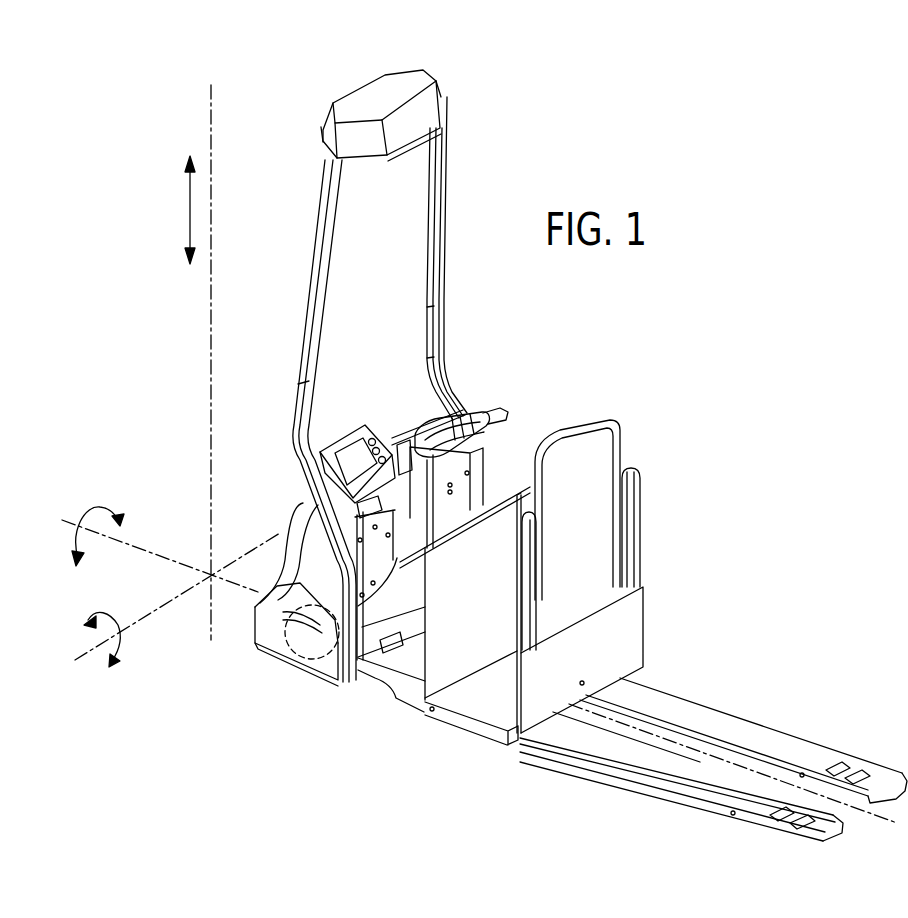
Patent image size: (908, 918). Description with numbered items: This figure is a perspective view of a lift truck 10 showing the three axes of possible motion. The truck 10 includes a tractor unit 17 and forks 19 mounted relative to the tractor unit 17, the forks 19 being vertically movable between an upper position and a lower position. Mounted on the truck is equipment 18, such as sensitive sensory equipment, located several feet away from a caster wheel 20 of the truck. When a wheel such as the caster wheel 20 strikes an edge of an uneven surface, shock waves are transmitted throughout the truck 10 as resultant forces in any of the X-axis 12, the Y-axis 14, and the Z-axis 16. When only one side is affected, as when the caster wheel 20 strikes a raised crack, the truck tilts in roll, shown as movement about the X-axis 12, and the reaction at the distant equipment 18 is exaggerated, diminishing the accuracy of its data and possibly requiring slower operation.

The truck 10 is at (724, 364).
The X-axis 12 is at (70, 522).
The Y-axis 14 is at (80, 652).
The Z-axis 16 is at (211, 106).
The tractor unit 17 is at (497, 470).
The equipment 18 is at (353, 92).
The forks 19 is at (727, 716).
The caster wheel 20 is at (312, 661).